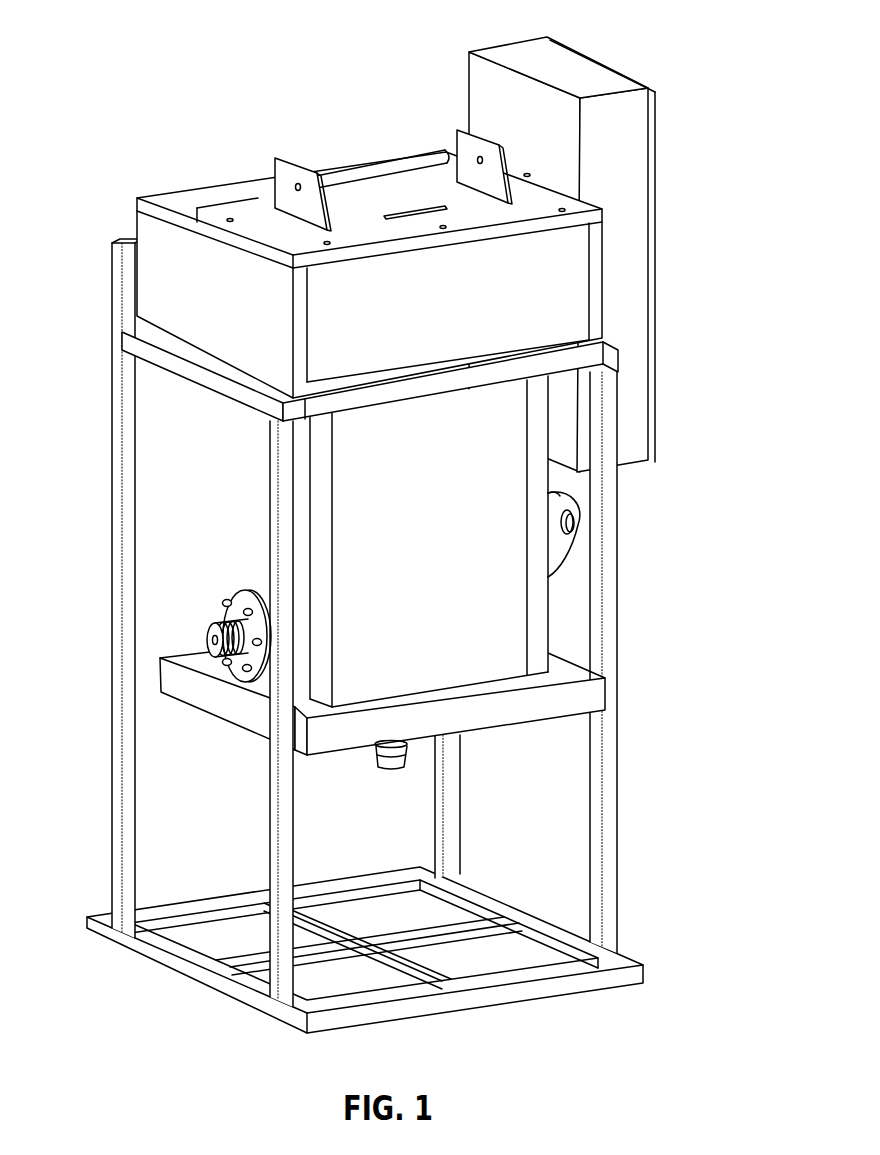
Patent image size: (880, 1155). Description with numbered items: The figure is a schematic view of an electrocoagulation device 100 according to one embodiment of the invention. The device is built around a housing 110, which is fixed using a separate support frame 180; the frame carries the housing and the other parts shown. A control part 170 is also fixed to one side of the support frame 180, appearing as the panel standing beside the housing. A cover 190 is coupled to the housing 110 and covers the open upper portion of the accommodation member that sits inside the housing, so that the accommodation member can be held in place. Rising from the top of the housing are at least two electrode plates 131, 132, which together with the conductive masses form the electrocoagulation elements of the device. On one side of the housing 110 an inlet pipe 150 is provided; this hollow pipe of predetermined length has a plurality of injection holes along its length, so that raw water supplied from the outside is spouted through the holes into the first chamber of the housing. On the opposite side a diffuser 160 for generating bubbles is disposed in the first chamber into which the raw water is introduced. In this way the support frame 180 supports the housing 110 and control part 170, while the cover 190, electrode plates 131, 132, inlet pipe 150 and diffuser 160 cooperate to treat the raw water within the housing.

The electrocoagulation device 100 is at (396, 516).
The housing 110 is at (497, 610).
The electrode plate 131 is at (297, 163).
The electrode plate 132 is at (458, 132).
The inlet pipe 150 is at (205, 627).
The diffuser 160 is at (582, 517).
The control part 170 is at (657, 243).
The support frame 180 is at (625, 798).
The cover 190 is at (237, 212).